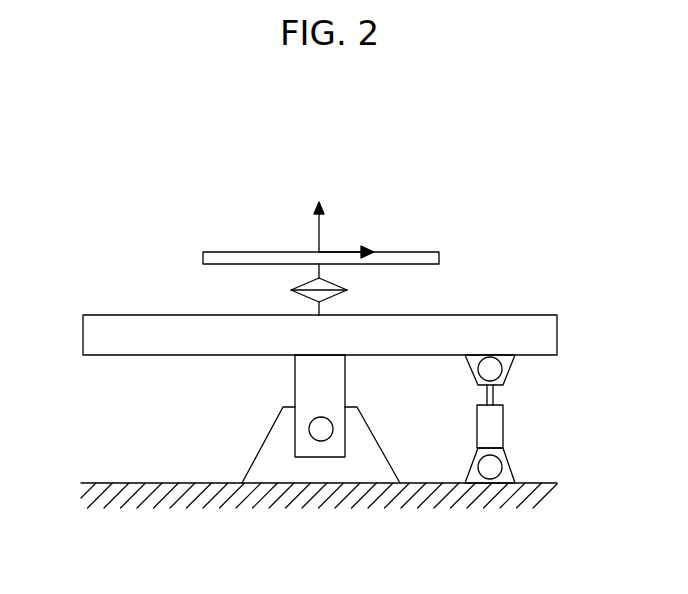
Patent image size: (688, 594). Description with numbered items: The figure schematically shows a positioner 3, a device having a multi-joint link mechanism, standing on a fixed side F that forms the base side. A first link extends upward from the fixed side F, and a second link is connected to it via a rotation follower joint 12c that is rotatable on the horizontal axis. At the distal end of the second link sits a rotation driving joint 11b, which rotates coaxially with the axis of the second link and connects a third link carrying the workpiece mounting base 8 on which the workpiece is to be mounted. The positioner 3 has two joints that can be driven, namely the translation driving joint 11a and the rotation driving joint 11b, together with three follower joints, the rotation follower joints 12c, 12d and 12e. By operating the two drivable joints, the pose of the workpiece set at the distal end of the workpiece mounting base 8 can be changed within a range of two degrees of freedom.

The fixed side F is at (113, 483).
The positioner 3 is at (546, 208).
The workpiece mounting base 8 is at (415, 252).
The translation driving joint 11a is at (503, 418).
The rotation driving joint 11b is at (347, 290).
The rotation follower joint 12c is at (322, 432).
The rotation follower joint 12d is at (495, 372).
The rotation follower joint 12e is at (492, 467).